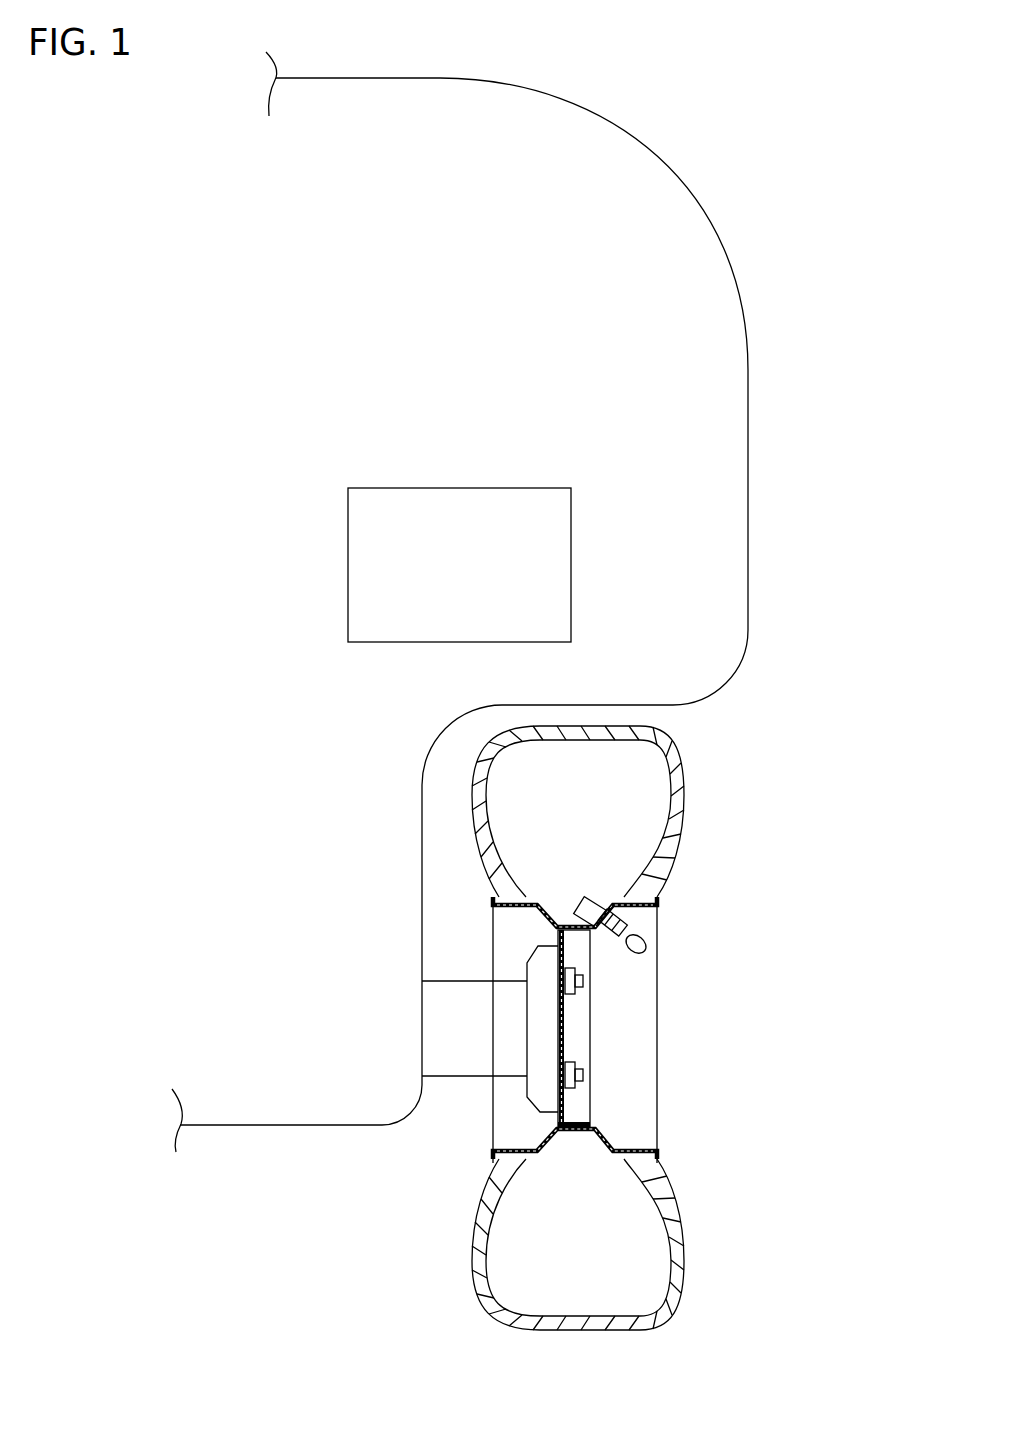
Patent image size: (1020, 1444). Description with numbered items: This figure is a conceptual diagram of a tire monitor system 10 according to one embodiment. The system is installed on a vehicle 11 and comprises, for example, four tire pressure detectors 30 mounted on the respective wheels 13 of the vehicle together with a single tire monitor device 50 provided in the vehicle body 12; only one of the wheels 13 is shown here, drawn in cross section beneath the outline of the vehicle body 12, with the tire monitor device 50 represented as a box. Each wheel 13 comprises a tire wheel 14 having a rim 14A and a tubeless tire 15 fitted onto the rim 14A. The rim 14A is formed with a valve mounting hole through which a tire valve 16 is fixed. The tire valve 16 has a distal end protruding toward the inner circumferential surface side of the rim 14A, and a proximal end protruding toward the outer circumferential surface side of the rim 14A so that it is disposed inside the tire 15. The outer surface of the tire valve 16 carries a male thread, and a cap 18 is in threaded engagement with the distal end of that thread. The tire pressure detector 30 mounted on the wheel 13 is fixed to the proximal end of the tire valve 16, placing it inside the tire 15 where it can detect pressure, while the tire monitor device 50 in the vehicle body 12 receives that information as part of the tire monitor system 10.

The tire monitor system 10 is at (615, 707).
The vehicle 11 is at (523, 602).
The vehicle body 12 is at (748, 505).
The wheel 13 is at (670, 1028).
The tire wheel 14 is at (652, 1030).
The rim 14A is at (638, 907).
The tubeless tire 15 is at (677, 1211).
The tire valve 16 is at (620, 947).
The cap 18 is at (645, 946).
The tire pressure detector 30 is at (591, 892).
The tire monitor device 50 is at (589, 625).